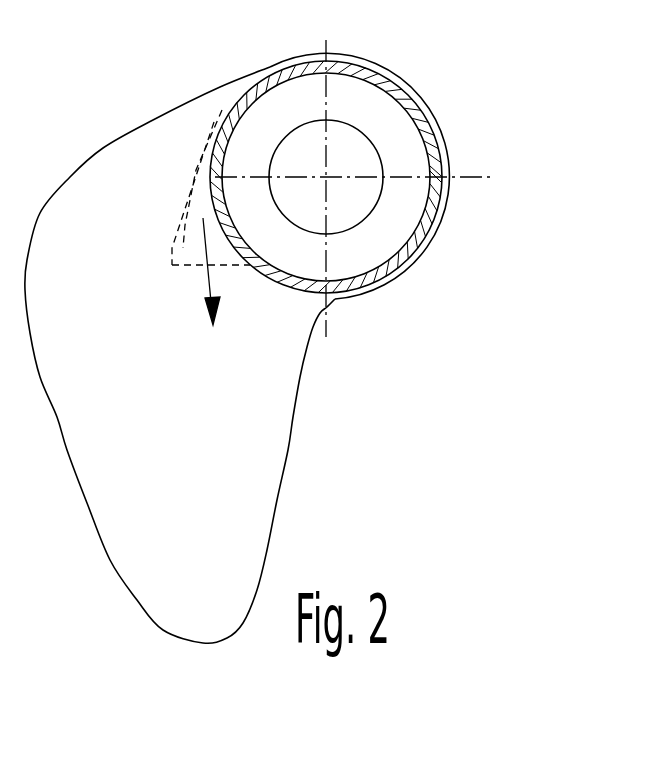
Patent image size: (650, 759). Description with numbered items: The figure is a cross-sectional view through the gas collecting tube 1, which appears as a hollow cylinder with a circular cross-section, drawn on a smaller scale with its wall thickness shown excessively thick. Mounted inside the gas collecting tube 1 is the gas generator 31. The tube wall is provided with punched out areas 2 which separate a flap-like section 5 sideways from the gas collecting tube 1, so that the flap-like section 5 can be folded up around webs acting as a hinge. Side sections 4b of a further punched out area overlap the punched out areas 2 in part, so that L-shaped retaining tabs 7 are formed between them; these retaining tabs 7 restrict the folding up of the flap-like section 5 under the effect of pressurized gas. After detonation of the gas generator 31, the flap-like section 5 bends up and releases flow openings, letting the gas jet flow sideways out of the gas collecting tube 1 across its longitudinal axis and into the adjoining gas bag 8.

The gas collecting tube 1 is at (413, 245).
The punched out areas 2 is at (214, 122).
The side sections 4b is at (255, 268).
The flap-like section 5 is at (203, 172).
The retaining tabs 7 is at (205, 262).
The gas bag 8 is at (245, 452).
The gas generator 31 is at (353, 155).